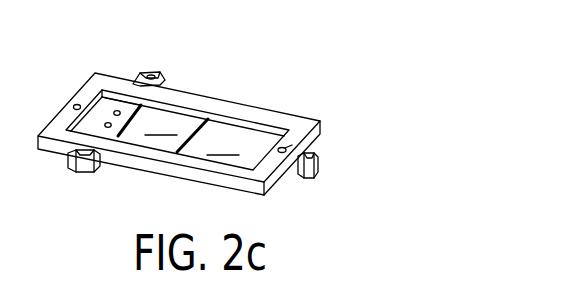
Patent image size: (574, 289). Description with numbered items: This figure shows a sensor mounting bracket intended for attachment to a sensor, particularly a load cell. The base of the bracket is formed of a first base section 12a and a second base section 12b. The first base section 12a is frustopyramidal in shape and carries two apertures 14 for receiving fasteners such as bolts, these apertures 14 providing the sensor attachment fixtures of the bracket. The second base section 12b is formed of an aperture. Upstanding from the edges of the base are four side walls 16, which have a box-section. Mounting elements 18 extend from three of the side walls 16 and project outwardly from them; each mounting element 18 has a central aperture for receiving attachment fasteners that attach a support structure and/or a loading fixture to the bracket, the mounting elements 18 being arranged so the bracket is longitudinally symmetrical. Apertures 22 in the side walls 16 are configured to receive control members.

The first base section 12a is at (176, 129).
The second base section 12b is at (223, 141).
The apertures 14 is at (117, 111).
The side walls 16 is at (82, 98).
The mounting elements 18 is at (162, 78).
The apertures 22 is at (289, 144).